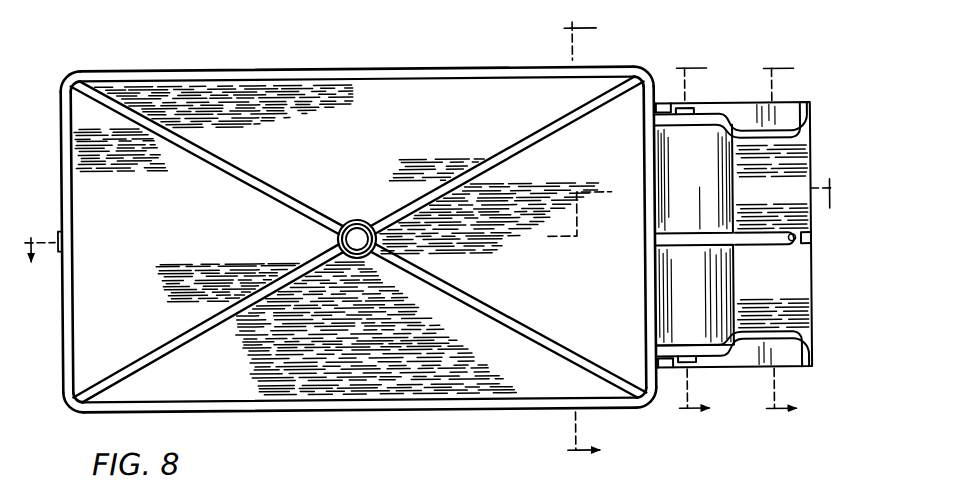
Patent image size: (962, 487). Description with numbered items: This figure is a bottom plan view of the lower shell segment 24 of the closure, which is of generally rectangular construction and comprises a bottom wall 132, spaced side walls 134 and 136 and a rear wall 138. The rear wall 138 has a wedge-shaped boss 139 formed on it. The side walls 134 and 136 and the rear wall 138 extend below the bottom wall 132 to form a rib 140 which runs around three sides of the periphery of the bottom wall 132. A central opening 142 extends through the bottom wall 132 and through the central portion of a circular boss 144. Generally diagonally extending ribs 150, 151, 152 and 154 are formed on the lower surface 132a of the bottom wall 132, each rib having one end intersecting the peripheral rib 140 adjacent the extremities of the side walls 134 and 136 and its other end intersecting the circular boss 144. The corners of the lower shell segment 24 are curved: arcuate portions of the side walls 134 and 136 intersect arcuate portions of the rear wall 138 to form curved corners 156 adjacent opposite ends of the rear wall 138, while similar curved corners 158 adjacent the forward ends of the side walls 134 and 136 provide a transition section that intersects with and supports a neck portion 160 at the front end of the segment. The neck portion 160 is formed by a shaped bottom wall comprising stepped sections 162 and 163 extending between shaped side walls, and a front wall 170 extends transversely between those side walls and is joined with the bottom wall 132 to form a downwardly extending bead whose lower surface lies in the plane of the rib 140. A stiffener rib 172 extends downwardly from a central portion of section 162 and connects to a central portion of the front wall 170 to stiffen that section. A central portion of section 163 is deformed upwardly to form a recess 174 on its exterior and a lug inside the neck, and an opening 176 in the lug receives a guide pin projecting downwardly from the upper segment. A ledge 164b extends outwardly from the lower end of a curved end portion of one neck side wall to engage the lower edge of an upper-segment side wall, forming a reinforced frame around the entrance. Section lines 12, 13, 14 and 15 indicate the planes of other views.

The section line 12 is at (431, 210).
The section line 13 is at (572, 242).
The section line 14 is at (683, 240).
The section line 15 is at (769, 239).
The lower shell segment 24 is at (483, 66).
The bottom wall 132 is at (155, 91).
The lower surface 132a is at (463, 53).
The side wall 134 is at (466, 405).
The side wall 136 is at (313, 69).
The rear wall 138 is at (65, 163).
The wedge-shaped boss 139 is at (60, 237).
The rib 140 is at (296, 405).
The central opening 142 is at (358, 236).
The circular boss 144 is at (349, 221).
The diagonally extending rib 150 is at (257, 180).
The diagonally extending rib 151 is at (182, 334).
The diagonally extending rib 152 is at (483, 305).
The diagonally extending rib 154 is at (487, 163).
The curved corners 156 is at (68, 67).
The curved corners 158 is at (667, 40).
The neck portion 160 is at (790, 100).
The stepped top section 162 is at (690, 140).
The stepped top section 163 is at (784, 198).
The ledge 164b is at (740, 357).
The front wall 170 is at (652, 166).
The stiffener rib 172 is at (692, 243).
The recess 174 is at (751, 248).
The opening 176 is at (792, 249).